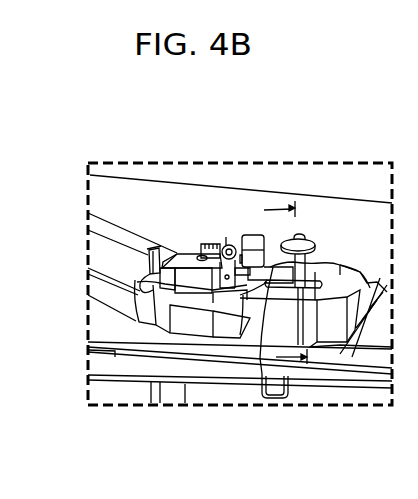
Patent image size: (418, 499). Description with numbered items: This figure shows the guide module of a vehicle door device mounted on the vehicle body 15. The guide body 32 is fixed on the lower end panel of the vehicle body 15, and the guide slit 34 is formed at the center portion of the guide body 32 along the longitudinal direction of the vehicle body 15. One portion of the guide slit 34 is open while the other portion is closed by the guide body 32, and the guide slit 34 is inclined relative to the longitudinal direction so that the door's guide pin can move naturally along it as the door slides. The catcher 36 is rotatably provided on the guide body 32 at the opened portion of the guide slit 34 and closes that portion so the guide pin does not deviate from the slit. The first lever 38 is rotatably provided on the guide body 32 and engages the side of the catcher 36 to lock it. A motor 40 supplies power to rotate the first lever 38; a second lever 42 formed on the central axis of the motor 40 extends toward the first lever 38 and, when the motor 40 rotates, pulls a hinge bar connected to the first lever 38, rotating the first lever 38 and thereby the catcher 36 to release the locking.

The vehicle body 15 is at (148, 340).
The guide body 32 is at (347, 262).
The guide slit 34 is at (262, 280).
The catcher 36 is at (145, 268).
The first lever 38 is at (220, 242).
The motor 40 is at (243, 236).
The second lever 42 is at (252, 310).